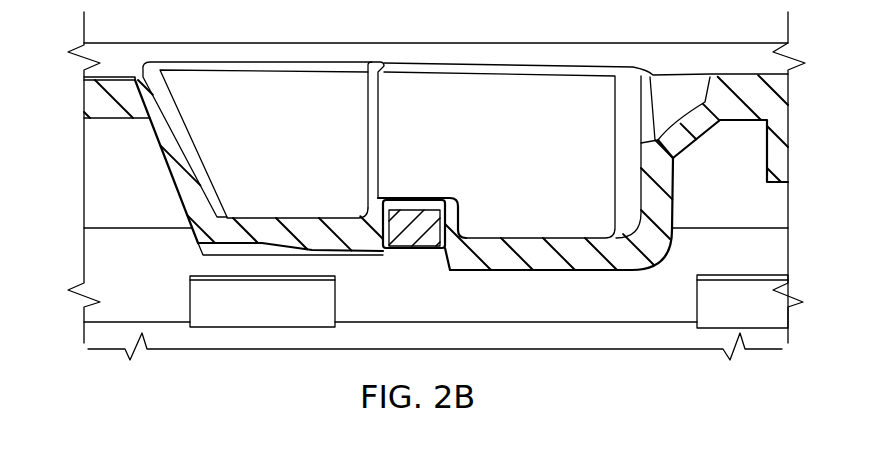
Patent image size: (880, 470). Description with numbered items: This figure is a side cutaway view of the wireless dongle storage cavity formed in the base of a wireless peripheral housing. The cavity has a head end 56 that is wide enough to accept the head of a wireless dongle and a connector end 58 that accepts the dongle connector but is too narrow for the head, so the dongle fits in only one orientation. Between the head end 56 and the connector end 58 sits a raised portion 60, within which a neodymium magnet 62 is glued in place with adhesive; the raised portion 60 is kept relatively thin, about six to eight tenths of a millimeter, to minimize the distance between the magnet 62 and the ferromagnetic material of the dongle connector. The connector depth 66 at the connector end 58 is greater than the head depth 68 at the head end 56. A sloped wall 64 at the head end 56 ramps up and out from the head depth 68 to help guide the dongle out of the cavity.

The head end 56 is at (316, 186).
The connector end 58 is at (546, 183).
The raised portion 60 is at (443, 197).
The neodymium magnet 62 is at (425, 245).
The sloped wall 64 is at (178, 128).
The connector depth 66 is at (569, 239).
The head depth 68 is at (257, 217).